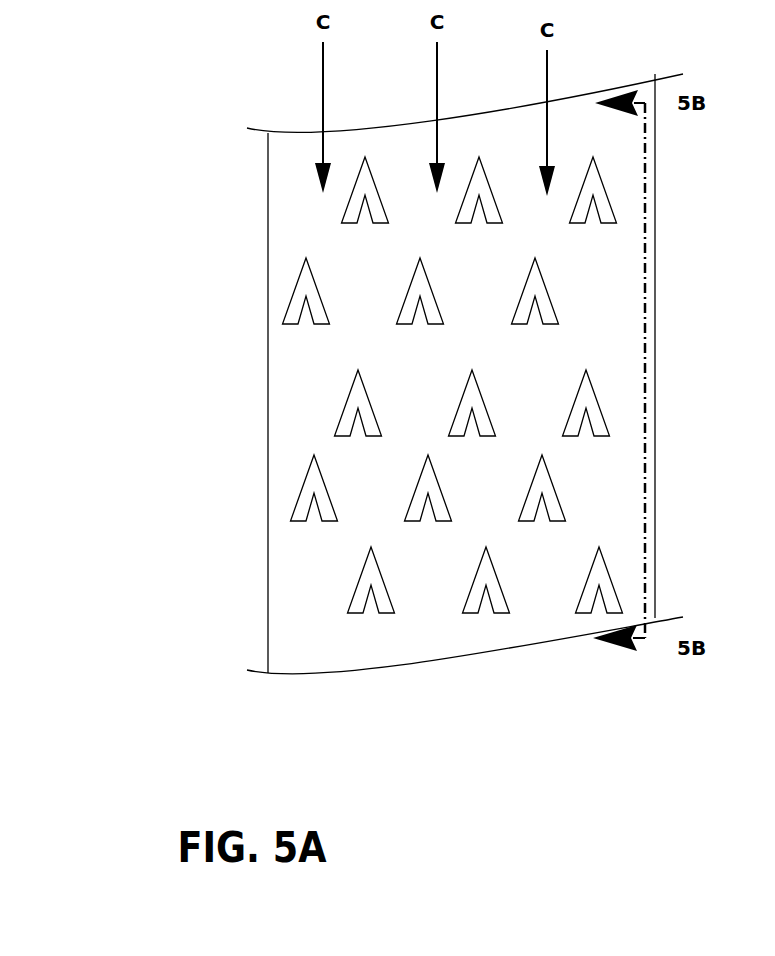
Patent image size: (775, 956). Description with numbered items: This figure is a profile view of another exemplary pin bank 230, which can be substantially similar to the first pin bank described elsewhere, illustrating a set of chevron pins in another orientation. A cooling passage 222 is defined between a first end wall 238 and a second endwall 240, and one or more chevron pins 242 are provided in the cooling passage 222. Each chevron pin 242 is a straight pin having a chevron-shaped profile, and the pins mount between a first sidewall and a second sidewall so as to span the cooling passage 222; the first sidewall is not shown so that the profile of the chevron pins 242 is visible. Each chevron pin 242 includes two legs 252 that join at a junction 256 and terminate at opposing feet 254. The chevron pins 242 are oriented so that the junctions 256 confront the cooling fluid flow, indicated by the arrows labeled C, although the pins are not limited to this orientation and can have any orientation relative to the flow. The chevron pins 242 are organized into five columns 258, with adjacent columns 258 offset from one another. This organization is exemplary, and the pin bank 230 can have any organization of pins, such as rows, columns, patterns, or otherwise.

The cooling passage 222 is at (658, 206).
The pin bank 230 is at (585, 447).
The first end wall 238 is at (656, 135).
The second endwall 240 is at (268, 270).
The chevron pin 242 is at (467, 398).
The leg 252 is at (306, 312).
The foot 254 is at (465, 231).
The junction 256 is at (366, 157).
The column 258 is at (305, 197).